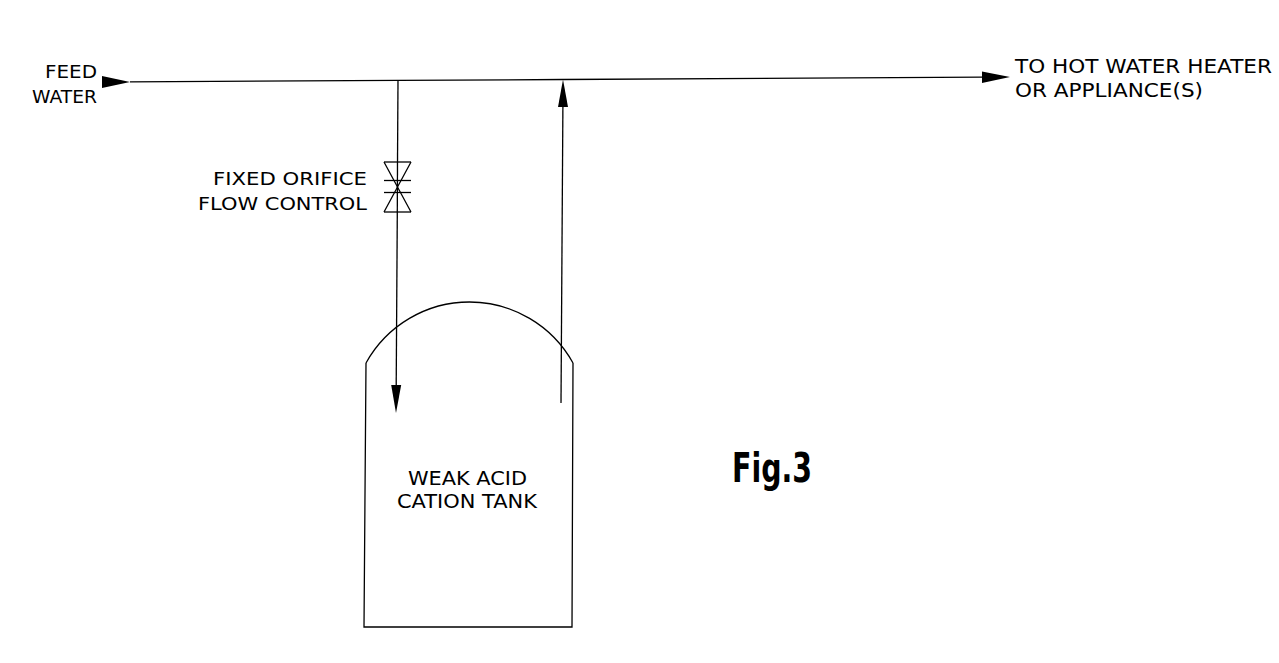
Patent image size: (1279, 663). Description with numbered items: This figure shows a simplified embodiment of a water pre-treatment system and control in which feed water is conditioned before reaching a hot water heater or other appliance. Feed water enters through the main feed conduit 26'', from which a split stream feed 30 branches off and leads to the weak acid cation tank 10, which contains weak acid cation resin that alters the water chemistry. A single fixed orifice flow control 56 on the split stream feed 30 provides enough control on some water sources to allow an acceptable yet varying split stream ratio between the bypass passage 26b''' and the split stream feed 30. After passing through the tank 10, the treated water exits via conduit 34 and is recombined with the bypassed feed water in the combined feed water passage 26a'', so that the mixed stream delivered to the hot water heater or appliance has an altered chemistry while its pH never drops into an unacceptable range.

The main feed conduit 26'' is at (250, 53).
The bypass conduit 26b''' is at (480, 48).
The combined feed water passage 26a'' is at (786, 49).
The split stream feed 30 is at (397, 285).
The fixed orifice flow control 56 is at (455, 188).
The conduit 34 is at (562, 263).
The weak acid cation tank 10 is at (553, 482).